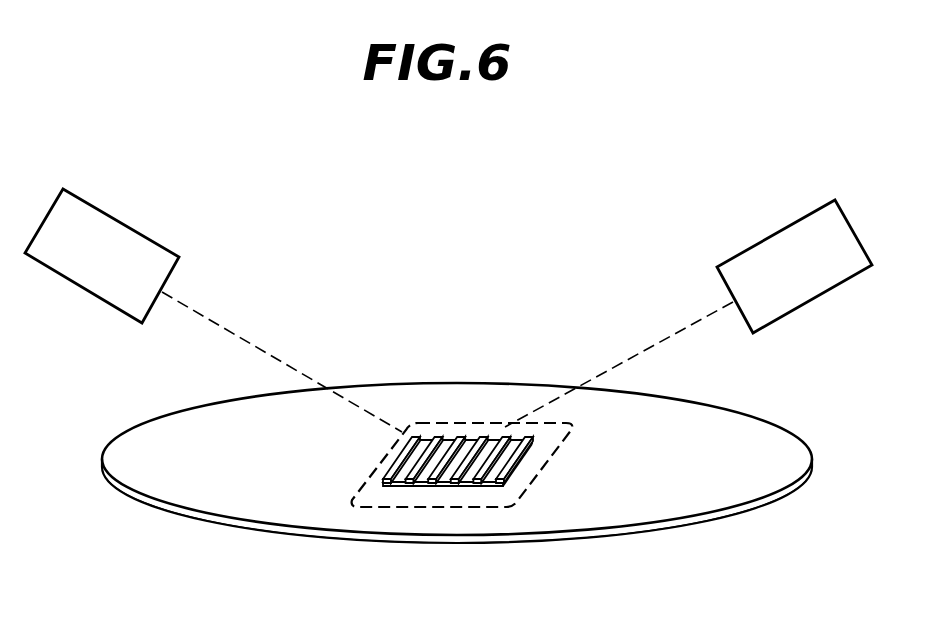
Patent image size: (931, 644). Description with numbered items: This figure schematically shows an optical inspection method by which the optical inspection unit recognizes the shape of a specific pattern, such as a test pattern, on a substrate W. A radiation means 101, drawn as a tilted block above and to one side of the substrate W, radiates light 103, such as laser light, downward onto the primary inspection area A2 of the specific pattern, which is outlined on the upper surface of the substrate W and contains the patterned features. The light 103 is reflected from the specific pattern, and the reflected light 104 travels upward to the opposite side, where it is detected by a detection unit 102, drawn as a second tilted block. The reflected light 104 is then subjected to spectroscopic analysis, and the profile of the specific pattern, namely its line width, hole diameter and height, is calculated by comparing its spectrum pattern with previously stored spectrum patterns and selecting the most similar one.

The radiation means 101 is at (120, 221).
The detection unit 102 is at (776, 233).
The light 103 is at (248, 341).
The reflected light 104 is at (645, 350).
The substrate W is at (130, 430).
The primary inspection area A2 is at (432, 510).